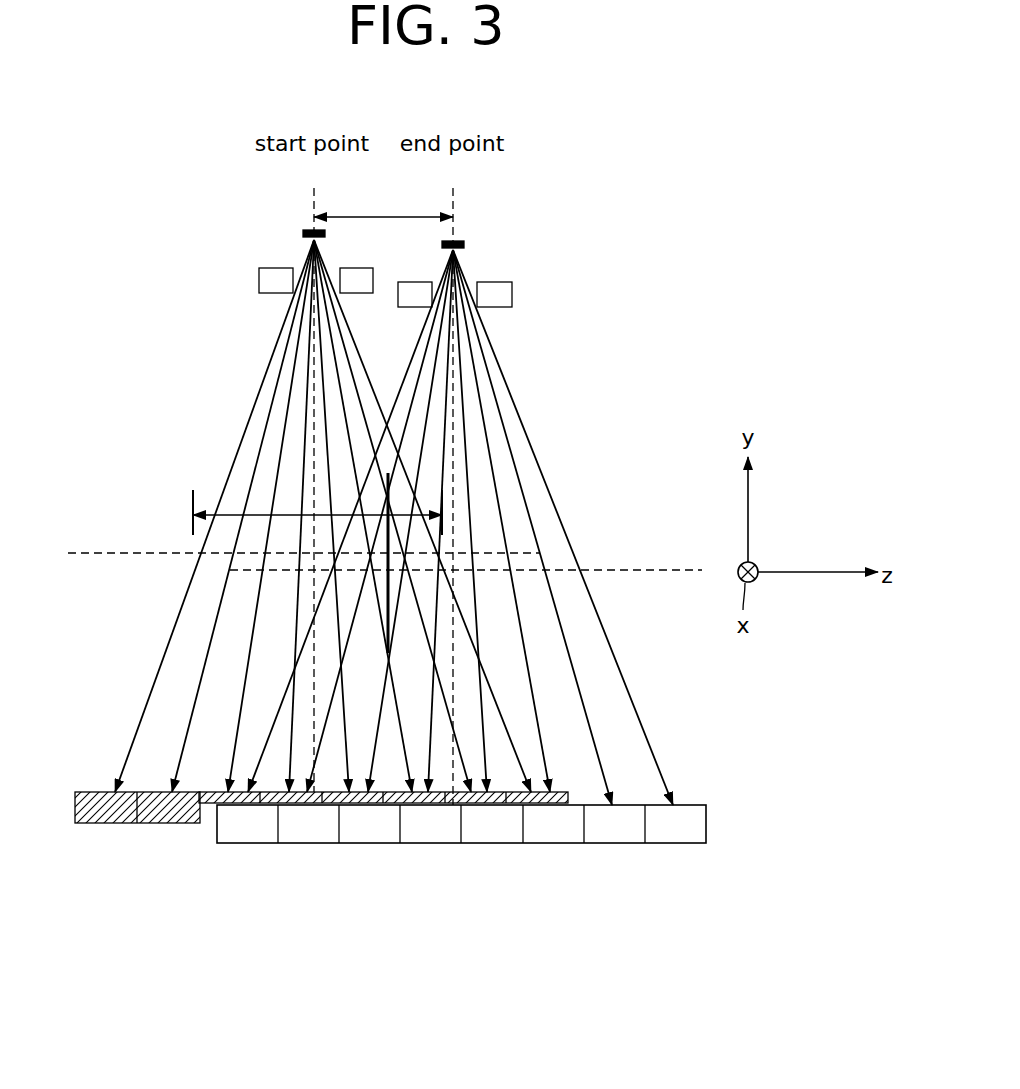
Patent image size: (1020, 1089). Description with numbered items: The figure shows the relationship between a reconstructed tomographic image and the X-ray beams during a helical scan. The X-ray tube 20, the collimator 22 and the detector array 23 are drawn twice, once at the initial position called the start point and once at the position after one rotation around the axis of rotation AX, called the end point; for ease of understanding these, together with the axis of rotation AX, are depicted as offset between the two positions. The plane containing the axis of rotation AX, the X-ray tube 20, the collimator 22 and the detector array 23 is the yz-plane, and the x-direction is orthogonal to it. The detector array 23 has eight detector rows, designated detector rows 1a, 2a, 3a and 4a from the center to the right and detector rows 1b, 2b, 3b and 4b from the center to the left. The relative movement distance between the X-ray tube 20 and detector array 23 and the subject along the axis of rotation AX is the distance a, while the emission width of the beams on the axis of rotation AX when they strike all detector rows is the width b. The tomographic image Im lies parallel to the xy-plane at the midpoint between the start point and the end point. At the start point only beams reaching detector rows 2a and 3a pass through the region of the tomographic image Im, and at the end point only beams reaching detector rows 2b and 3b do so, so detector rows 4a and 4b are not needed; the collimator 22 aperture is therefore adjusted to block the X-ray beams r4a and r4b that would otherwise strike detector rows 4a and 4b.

The X-ray tube 20 is at (305, 228).
The collimator 22 is at (268, 268).
The detector array 23 is at (386, 806).
The relative movement distance a is at (383, 202).
The emission width b is at (228, 515).
The axis of rotation AX is at (115, 550).
The tomographic image Im is at (388, 470).
The X-ray beam r4a is at (610, 633).
The X-ray beam r4b is at (167, 640).
The detector row 1a is at (366, 714).
The detector row 2a is at (392, 773).
The detector row 3a is at (415, 709).
The detector row 4a is at (587, 791).
The detector row 1b is at (255, 714).
The detector row 2b is at (210, 753).
The detector row 3b is at (165, 824).
The detector row 4b is at (80, 755).